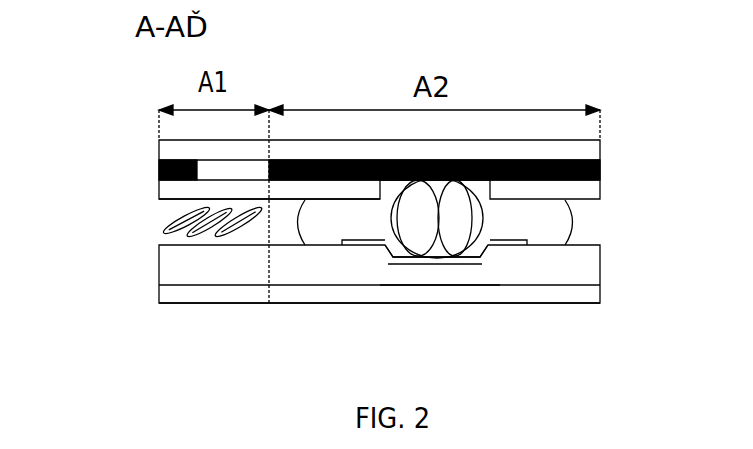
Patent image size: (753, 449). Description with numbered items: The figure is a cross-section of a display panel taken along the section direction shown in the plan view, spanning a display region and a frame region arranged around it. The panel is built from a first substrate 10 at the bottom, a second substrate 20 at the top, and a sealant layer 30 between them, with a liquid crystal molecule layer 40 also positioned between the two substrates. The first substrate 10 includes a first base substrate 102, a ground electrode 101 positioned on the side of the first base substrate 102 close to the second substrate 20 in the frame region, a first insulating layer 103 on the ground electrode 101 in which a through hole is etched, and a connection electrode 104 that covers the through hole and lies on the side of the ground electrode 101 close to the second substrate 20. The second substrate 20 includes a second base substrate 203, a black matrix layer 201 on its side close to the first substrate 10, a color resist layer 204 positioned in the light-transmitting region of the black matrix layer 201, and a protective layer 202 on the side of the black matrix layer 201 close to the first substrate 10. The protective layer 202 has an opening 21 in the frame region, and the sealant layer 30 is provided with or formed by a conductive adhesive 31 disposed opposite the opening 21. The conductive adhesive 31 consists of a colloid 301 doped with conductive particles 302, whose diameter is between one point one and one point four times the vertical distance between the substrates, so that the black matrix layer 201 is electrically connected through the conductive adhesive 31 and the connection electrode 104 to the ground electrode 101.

The first substrate 10 is at (387, 304).
The ground electrode 101 is at (433, 285).
The first base substrate 102 is at (610, 290).
The first insulating layer 103 is at (602, 262).
The connection electrode 104 is at (547, 257).
The second substrate 20 is at (393, 154).
The black matrix layer 201 is at (602, 170).
The protective layer 202 is at (602, 194).
The second base substrate 203 is at (602, 150).
The color resist layer 204 is at (212, 160).
The opening 21 is at (437, 190).
The sealant layer 30 is at (575, 218).
The colloid 301 is at (483, 232).
The conductive adhesive 31 is at (437, 218).
The conductive particles 302 is at (400, 245).
The liquid crystal molecule layer 40 is at (205, 232).